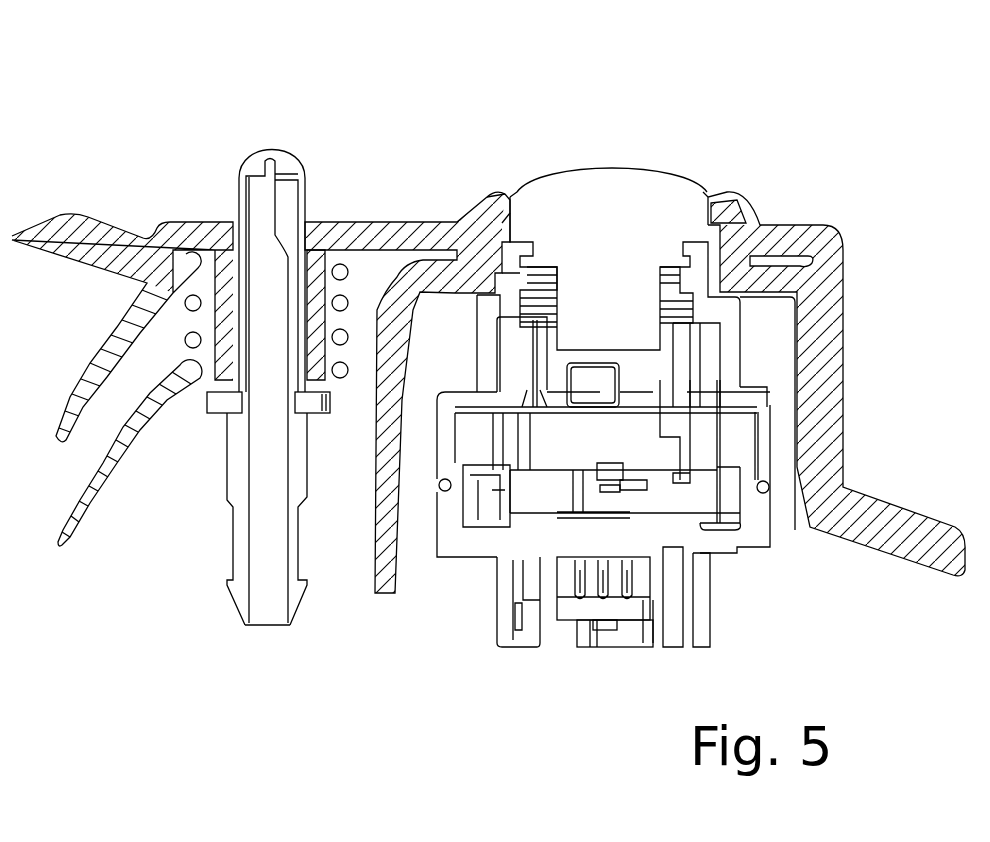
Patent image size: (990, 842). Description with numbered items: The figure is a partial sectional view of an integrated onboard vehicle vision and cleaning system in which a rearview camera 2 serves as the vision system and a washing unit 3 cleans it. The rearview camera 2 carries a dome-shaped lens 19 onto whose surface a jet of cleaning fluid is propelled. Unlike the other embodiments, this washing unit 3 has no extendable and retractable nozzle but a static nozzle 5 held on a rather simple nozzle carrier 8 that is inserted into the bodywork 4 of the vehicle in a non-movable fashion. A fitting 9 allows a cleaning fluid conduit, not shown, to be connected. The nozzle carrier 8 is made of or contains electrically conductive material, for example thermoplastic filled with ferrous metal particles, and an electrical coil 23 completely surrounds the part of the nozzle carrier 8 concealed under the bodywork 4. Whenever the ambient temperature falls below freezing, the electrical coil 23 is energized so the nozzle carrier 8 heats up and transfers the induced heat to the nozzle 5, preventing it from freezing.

The rearview camera 2 is at (673, 130).
The washing unit 3 is at (276, 650).
The bodywork 4 is at (380, 238).
The nozzle 5 is at (260, 190).
The nozzle carrier 8 is at (260, 190).
The fitting 9 is at (232, 583).
The dome-shaped lens 19 is at (626, 239).
The electrical coil 23 is at (188, 262).